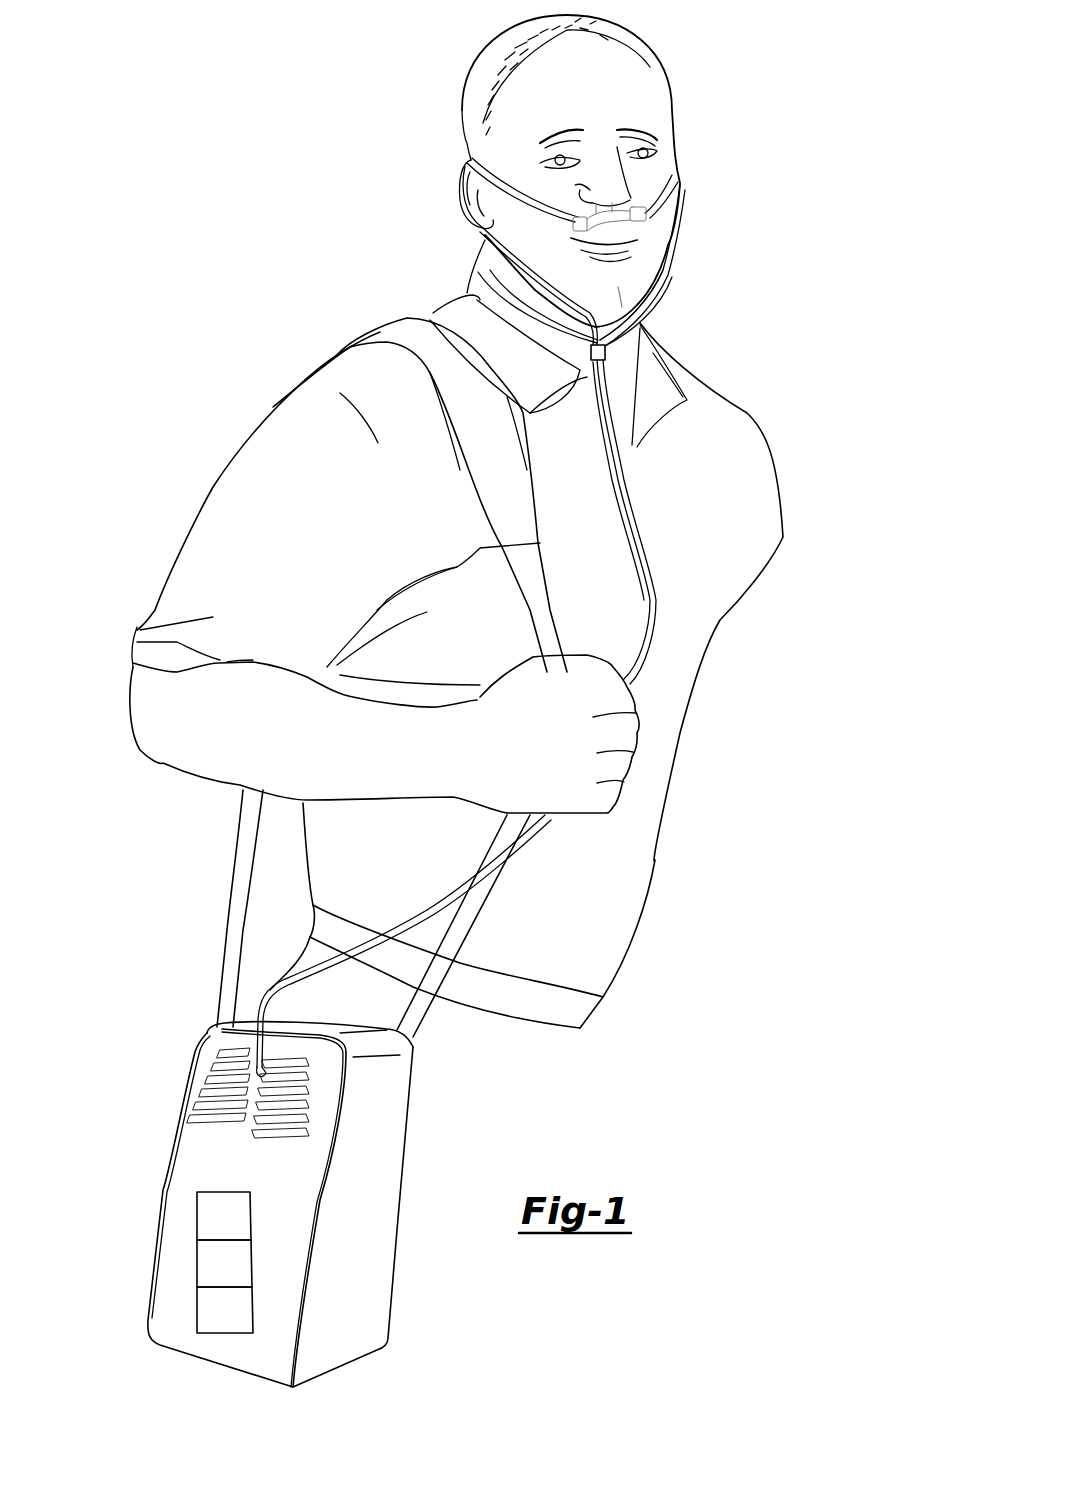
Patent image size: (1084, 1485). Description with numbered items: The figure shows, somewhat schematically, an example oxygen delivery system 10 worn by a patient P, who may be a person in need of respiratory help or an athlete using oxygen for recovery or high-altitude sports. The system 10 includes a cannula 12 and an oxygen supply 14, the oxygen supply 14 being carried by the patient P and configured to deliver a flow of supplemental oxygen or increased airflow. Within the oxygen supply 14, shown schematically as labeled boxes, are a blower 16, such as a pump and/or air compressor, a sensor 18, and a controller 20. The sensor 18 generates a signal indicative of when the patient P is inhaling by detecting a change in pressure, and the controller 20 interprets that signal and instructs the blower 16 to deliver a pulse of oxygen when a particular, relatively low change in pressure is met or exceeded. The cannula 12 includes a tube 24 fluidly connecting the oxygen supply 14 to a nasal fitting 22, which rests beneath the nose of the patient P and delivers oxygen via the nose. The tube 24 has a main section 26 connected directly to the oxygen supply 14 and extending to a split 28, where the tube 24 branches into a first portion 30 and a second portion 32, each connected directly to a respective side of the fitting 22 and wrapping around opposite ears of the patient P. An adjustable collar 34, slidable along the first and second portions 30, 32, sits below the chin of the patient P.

The oxygen delivery system 10 is at (207, 1005).
The cannula 12 is at (643, 216).
The oxygen supply 14 is at (163, 1193).
The blower 16 is at (232, 1229).
The sensor 18 is at (232, 1276).
The controller 20 is at (232, 1321).
The nasal fitting 22 is at (613, 220).
The tube 24 is at (650, 598).
The main section 26 is at (643, 570).
The split 28 is at (610, 443).
The first portion 30 is at (537, 203).
The second portion 32 is at (673, 180).
The adjustable collar 34 is at (605, 352).
The patient P is at (710, 445).